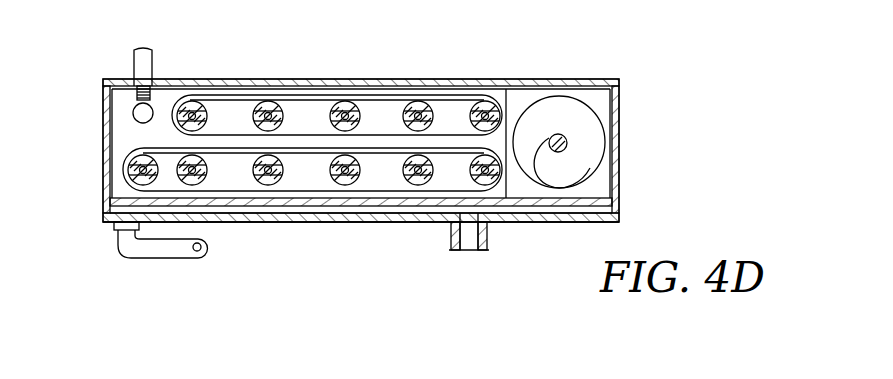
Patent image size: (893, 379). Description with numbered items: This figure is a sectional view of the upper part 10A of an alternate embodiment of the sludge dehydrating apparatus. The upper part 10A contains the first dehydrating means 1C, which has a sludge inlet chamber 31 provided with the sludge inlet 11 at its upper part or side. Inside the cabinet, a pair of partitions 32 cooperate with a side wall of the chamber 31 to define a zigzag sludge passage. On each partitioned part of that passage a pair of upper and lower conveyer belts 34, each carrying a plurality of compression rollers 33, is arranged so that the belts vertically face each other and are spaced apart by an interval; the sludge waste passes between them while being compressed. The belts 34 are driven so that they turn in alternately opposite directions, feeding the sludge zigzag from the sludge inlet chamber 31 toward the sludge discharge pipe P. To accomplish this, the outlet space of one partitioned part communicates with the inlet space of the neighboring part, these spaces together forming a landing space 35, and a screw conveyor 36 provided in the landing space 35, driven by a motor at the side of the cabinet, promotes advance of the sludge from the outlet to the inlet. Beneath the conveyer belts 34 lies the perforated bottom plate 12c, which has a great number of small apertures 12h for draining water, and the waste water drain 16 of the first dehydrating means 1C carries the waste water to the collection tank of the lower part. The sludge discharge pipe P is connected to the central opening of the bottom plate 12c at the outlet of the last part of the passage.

The upper part 10A is at (634, 103).
The sludge inlet 11 is at (137, 80).
The first dehydrating means 1C is at (420, 100).
The sludge inlet chamber 31 is at (140, 139).
The partitions 32 is at (383, 144).
The compression rollers 33 is at (197, 157).
The conveyer belts 34 is at (452, 153).
The landing space 35 is at (593, 107).
The screw conveyor 36 is at (587, 168).
The perforated bottom plate 12c is at (311, 194).
The small apertures 12h is at (380, 198).
The waste water drain 16 is at (467, 242).
The sludge discharge pipe P is at (164, 253).